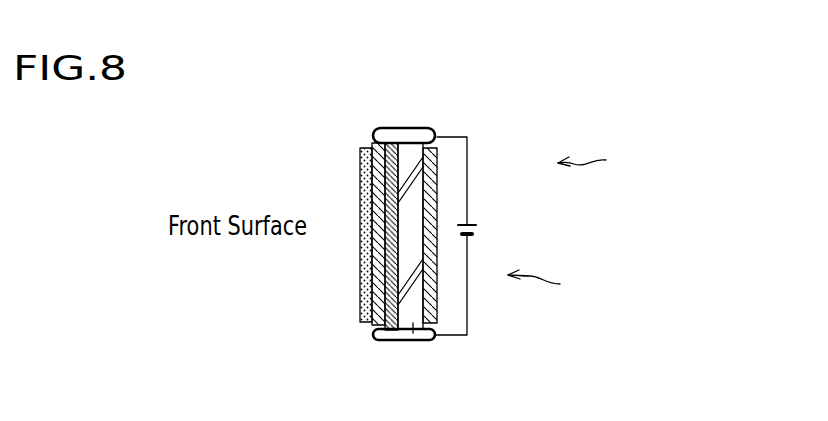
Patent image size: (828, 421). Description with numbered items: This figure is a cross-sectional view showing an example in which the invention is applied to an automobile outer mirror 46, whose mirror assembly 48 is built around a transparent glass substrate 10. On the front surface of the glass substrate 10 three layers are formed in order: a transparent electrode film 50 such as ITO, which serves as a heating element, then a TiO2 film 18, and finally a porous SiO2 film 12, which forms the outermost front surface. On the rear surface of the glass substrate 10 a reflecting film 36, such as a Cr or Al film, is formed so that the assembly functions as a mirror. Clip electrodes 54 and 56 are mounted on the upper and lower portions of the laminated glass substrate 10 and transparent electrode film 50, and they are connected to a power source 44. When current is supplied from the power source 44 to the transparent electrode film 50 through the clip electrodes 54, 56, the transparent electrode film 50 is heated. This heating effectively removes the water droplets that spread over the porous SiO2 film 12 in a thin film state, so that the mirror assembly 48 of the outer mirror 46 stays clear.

The transparent glass substrate 10 is at (423, 339).
The porous SiO2 film 12 is at (362, 300).
The TiO2 film 18 is at (380, 312).
The transparent electrode film 50 is at (391, 322).
The reflecting film 36 is at (433, 303).
The clip electrode 54 is at (408, 128).
The clip electrode 56 is at (405, 341).
The power source 44 is at (470, 222).
The automobile outer mirror 46 is at (645, 156).
The mirror assembly 48 is at (550, 279).